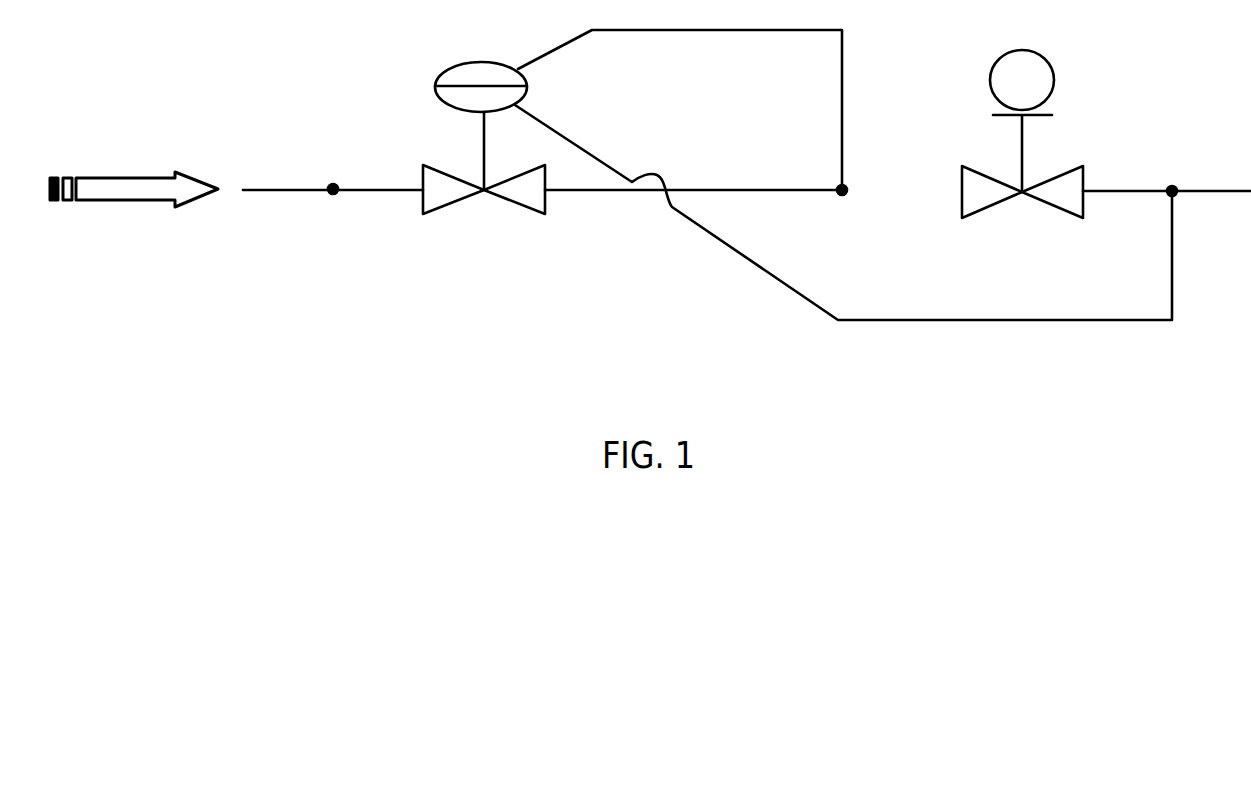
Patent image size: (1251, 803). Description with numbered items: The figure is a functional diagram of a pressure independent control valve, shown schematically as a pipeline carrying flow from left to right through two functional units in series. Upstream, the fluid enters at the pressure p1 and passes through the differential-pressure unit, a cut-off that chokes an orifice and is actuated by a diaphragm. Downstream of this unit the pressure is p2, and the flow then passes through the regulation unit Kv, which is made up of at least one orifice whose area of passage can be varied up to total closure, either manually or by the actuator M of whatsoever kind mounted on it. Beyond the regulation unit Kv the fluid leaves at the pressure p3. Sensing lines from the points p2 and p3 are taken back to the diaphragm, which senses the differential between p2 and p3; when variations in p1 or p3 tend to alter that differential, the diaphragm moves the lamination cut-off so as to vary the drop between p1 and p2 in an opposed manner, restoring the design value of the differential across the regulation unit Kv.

The pressure upstream of the valve p1 is at (339, 223).
The intermediate pressure p2 is at (860, 225).
The functional unit Kv is at (1022, 193).
The actuator M is at (1022, 80).
The pressure downstream of the valve p3 is at (1205, 228).